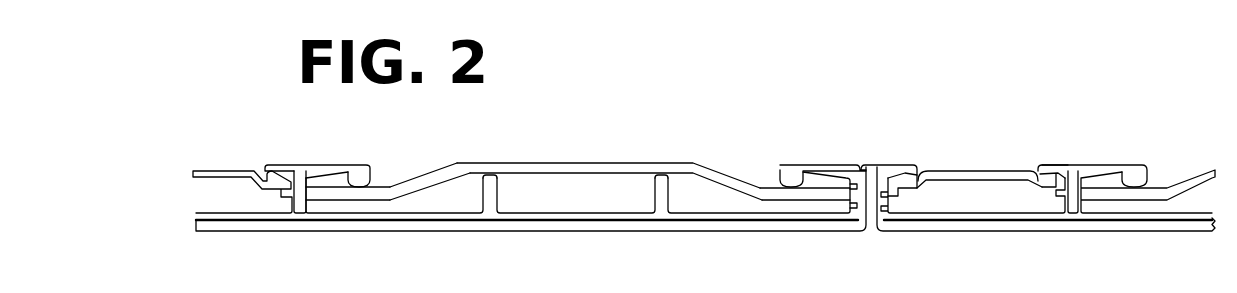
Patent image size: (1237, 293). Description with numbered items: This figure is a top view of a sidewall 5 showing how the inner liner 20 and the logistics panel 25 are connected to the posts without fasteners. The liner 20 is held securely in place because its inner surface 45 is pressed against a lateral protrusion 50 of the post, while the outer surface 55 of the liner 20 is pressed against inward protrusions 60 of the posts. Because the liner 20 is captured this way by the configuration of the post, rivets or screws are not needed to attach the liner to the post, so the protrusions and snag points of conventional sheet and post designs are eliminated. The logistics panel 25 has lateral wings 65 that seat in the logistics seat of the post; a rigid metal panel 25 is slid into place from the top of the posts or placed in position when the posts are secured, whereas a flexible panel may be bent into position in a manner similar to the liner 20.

The sidewall 5 is at (710, 120).
The inner liner 20 is at (532, 165).
The logistics panel 25 is at (980, 170).
The inner surface 45 is at (466, 163).
The lateral protrusion 50 is at (352, 168).
The outer surface 55 is at (597, 173).
The inward protrusion 60 is at (492, 192).
The lateral wing 65 is at (917, 188).